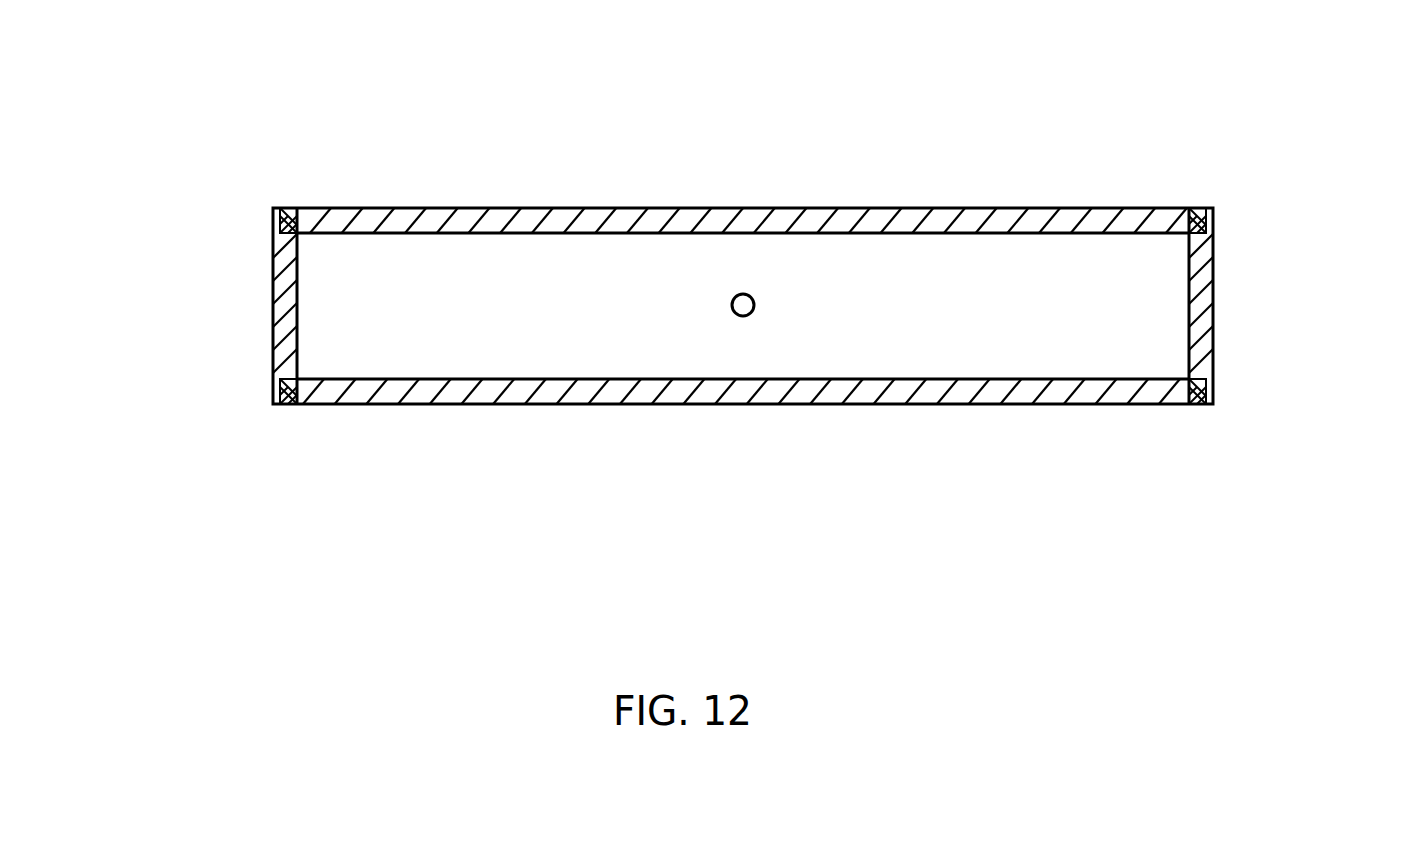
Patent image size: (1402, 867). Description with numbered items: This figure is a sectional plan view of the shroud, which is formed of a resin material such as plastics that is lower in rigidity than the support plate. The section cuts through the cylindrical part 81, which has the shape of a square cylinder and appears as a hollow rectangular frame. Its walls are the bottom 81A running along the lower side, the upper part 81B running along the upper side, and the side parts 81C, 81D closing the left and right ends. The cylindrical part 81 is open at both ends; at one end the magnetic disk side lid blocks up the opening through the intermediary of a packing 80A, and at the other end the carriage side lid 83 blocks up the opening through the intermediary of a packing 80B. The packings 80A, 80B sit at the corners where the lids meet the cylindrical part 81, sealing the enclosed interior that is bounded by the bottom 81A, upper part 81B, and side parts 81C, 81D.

The cylindrical part 81 is at (745, 285).
The packing 80A is at (287, 207).
The packing 80B is at (1197, 207).
The bottom 81A is at (835, 388).
The upper part 81B is at (752, 217).
The side part 81C is at (283, 332).
The side part 81D is at (1202, 298).
The carriage side lid 83 is at (580, 325).